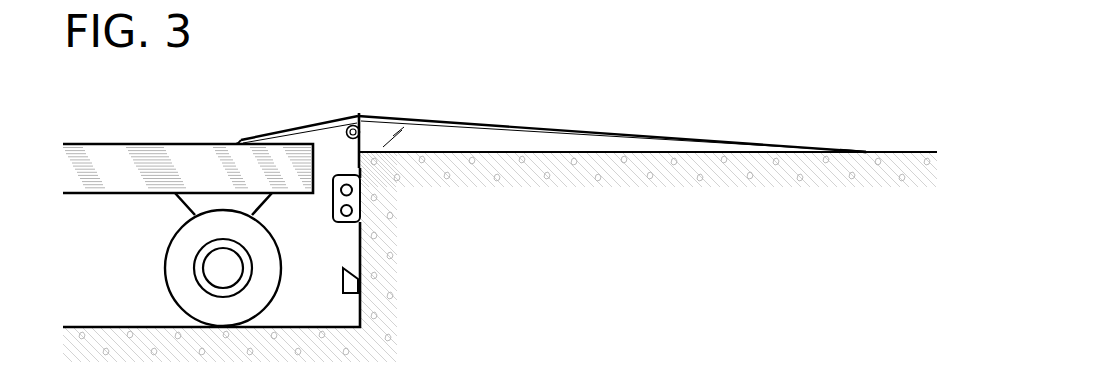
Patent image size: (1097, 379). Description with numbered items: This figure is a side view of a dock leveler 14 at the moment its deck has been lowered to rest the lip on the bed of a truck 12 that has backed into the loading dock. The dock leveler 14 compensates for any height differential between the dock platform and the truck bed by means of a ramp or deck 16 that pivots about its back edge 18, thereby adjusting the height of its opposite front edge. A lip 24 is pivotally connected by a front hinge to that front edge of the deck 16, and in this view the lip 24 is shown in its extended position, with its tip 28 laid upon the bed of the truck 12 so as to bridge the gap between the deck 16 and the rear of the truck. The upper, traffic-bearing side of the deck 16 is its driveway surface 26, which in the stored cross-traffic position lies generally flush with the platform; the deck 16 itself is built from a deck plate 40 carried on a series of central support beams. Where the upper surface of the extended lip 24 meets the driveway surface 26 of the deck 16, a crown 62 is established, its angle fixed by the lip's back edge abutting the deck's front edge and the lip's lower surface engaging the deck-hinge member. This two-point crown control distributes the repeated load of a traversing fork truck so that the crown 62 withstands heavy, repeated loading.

The truck 12 is at (140, 194).
The dock leveler 14 is at (549, 94).
The deck 16 is at (582, 143).
The back edge 18 is at (865, 151).
The lip 24 is at (306, 125).
The driveway surface 26 is at (653, 136).
The tip 28 is at (240, 143).
The deck plate 40 is at (423, 122).
The crown 62 is at (358, 108).